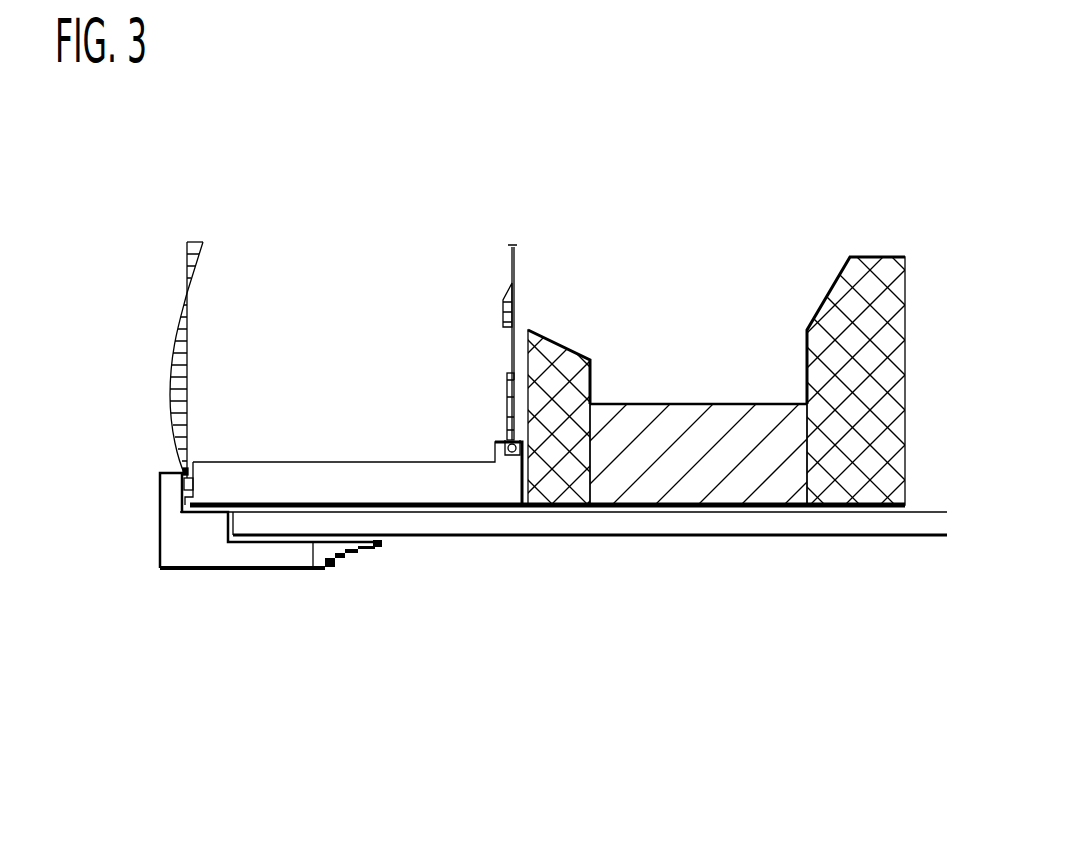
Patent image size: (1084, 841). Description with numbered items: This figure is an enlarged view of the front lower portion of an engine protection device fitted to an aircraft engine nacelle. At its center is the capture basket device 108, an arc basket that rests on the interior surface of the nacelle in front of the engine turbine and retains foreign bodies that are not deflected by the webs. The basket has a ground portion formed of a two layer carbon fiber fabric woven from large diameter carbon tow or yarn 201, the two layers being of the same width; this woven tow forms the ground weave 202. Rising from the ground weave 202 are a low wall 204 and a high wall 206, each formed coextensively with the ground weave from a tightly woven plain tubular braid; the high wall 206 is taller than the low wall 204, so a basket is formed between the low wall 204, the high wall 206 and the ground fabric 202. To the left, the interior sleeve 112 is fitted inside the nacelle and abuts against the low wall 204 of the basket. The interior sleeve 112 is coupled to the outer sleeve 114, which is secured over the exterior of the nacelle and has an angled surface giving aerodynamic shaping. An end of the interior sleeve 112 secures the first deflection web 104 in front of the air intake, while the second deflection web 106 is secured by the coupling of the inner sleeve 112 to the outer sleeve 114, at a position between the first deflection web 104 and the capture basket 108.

The first deflection web 104 is at (203, 315).
The second deflection web 106 is at (496, 303).
The capture basket device 108 is at (745, 460).
The interior sleeve 112 is at (429, 490).
The outer sleeve 114 is at (262, 568).
The carbon tow 201 is at (873, 490).
The ground weave 202 is at (680, 418).
The low wall 204 is at (562, 338).
The high wall 206 is at (890, 290).